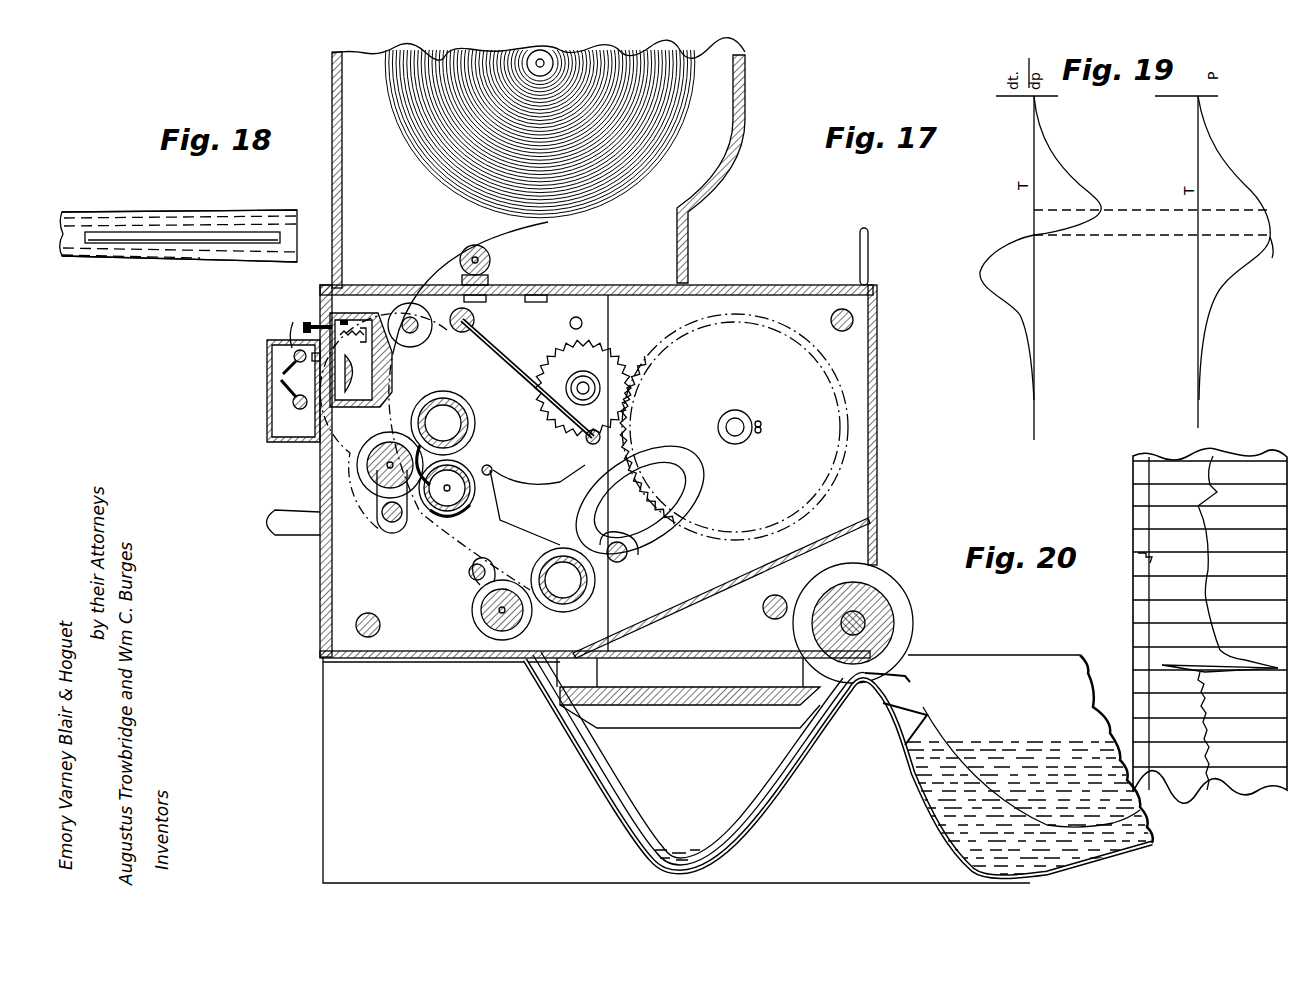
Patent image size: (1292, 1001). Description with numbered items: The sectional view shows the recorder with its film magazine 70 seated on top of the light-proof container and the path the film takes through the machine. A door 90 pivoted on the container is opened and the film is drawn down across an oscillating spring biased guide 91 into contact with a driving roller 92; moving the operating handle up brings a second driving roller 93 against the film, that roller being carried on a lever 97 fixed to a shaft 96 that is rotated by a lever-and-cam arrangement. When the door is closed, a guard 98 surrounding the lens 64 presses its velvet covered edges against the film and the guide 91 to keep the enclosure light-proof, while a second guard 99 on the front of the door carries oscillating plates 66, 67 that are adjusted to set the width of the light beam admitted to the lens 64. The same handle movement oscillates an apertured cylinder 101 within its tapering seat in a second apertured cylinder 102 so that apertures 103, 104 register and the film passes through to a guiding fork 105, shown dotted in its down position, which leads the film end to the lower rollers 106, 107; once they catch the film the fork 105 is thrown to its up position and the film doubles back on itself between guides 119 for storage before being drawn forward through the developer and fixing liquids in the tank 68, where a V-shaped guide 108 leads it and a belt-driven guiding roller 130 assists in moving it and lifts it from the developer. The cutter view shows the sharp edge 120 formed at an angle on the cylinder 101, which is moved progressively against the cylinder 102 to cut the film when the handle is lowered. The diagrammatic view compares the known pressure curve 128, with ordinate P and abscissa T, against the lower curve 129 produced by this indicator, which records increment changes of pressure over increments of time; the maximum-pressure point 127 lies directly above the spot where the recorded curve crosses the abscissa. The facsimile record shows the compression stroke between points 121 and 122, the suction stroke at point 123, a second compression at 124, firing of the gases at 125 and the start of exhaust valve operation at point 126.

In FIG. 17, the film magazine 70 is at (688, 226).
In FIG. 17, the guard 98 is at (356, 316).
In FIG. 17, the oscillating plate 66 is at (309, 313).
In FIG. 17, the second guard 99 is at (274, 330).
In FIG. 17, the oscillating plate 67 is at (270, 395).
In FIG. 17, the lens 64 is at (332, 396).
In FIG. 17, the oscillating spring biased guide 91 is at (395, 374).
In FIG. 17, the driving roller 92 is at (460, 404).
In FIG. 17, the second driving roller 93 is at (372, 470).
In FIG. 17, the lever 97 is at (384, 516).
In FIG. 17, the shaft 96 is at (393, 522).
In FIG. 17, the aperture 103 is at (444, 508).
In FIG. 17, the aperture 104 is at (447, 440).
In FIG. 18, the aperture 104 is at (282, 238).
In FIG. 17, the second apertured cylinder 102 is at (468, 455).
In FIG. 18, the second apertured cylinder 102 is at (218, 263).
In FIG. 17, the guiding fork 105 is at (533, 462).
In FIG. 17, the apertured cylinder 101 is at (490, 512).
In FIG. 18, the apertured cylinder 101 is at (68, 245).
In FIG. 17, the guides 119 is at (695, 483).
In FIG. 17, the roller 106 is at (590, 588).
In FIG. 17, the roller 107 is at (480, 622).
In FIG. 17, the door 90 is at (580, 443).
In FIG. 17, the tank 68 is at (357, 805).
In FIG. 17, the V-shaped guide 108 is at (764, 790).
In FIG. 17, the guiding roller 130 is at (908, 614).
In FIG. 18, the sharp edge 120 is at (100, 228).
In FIG. 19, the lower curve 129 is at (1058, 165).
In FIG. 19, the pressure curve 128 is at (1218, 158).
In FIG. 19, the point 127 is at (1261, 258).
In FIG. 20, the point 121 is at (1218, 462).
In FIG. 20, the point 122 is at (1222, 492).
In FIG. 20, the point 123 is at (1210, 598).
In FIG. 20, the point 124 is at (1222, 648).
In FIG. 20, the point 125 is at (1236, 655).
In FIG. 20, the point 126 is at (1206, 676).